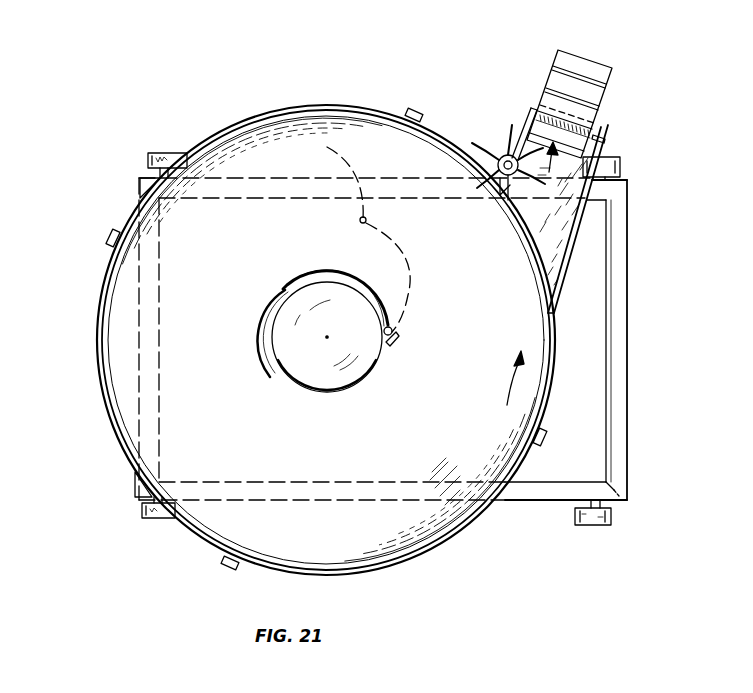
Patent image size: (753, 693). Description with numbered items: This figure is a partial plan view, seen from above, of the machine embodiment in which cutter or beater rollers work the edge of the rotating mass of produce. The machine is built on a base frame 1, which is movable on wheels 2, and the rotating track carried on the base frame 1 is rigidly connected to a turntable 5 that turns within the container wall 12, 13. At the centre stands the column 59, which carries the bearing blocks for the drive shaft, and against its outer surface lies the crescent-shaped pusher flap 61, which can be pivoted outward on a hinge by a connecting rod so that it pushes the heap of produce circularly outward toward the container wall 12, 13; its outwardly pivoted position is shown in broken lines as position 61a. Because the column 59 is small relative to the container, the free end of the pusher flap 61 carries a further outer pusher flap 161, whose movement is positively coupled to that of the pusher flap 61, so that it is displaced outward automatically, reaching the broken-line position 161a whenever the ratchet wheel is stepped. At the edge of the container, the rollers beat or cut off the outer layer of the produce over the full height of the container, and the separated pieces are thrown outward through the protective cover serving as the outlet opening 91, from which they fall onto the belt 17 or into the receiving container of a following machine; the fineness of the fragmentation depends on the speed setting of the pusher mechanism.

The base frame 1 is at (615, 312).
The wheels 2 is at (595, 525).
The turntable 5 is at (250, 160).
The container wall 12 is at (112, 430).
The container wall 13 is at (109, 236).
The belt 17 is at (593, 68).
The column 59 is at (327, 387).
The pusher flap 61 is at (327, 273).
The pusher flap outer position 61a is at (402, 246).
The outlet opening 91 is at (563, 225).
The outer pusher flap 161 is at (268, 333).
The outer pusher flap outer position 161a is at (355, 176).